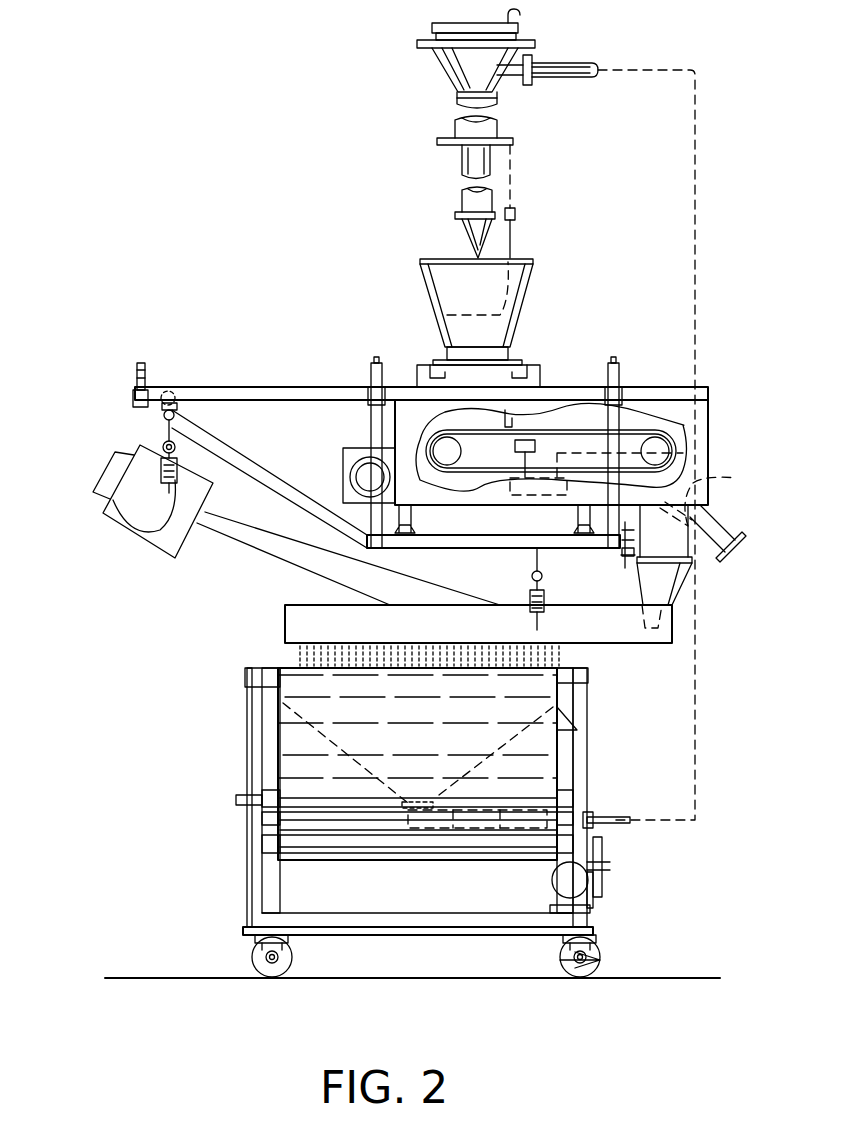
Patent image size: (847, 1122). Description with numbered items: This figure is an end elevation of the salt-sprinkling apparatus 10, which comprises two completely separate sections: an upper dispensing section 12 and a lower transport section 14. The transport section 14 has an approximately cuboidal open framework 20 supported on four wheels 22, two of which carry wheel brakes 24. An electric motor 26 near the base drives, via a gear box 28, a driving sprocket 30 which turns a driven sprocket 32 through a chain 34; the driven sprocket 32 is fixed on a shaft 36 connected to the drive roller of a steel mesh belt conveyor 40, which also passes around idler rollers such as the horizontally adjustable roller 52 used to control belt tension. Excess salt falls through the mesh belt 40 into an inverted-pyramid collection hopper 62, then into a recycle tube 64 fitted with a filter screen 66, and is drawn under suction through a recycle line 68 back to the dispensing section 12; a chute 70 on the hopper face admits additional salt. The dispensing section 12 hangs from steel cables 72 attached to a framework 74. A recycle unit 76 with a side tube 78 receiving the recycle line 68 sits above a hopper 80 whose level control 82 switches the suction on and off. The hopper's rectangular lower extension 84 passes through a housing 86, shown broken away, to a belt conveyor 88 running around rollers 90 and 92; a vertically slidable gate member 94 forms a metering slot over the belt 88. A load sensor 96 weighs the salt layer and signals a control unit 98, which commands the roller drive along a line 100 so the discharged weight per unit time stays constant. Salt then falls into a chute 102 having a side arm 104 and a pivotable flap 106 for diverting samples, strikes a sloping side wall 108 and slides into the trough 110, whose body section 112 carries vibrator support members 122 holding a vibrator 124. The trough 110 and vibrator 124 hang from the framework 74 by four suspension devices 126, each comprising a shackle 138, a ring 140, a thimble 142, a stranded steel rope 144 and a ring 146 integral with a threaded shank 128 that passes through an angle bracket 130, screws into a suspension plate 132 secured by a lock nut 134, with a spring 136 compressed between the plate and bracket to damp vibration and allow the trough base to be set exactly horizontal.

The apparatus 10 is at (299, 291).
The dispensing section 12 is at (584, 271).
The transport section 14 is at (723, 720).
The open framework 20 is at (583, 766).
The wheels 22 is at (293, 960).
The wheel brakes 24 is at (558, 960).
The electric motor 26 is at (551, 877).
The gear box 28 is at (555, 898).
The driving sprocket 30 is at (603, 888).
The driven sprocket 32 is at (268, 853).
The chain 34 is at (603, 868).
The shaft 36 is at (600, 838).
The belt conveyor 40 is at (303, 765).
The idler roller 52 is at (263, 812).
The collection hopper 62 is at (317, 737).
The recycle tube 64 is at (452, 845).
The filter screen 66 is at (452, 830).
The recycle line 68 is at (698, 823).
The chute 70 is at (578, 725).
The steel cables 72 is at (140, 362).
The framework 74 is at (292, 486).
The recycle unit 76 is at (455, 68).
The side tube 78 is at (515, 80).
The hopper 80 is at (505, 312).
The level control 82 is at (512, 243).
The lower extension 84 is at (490, 423).
The housing 86 is at (696, 340).
The belt conveyor 88 is at (470, 432).
The roller 90 is at (447, 466).
The roller 92 is at (668, 447).
The gate member 94 is at (525, 417).
The load sensor 96 is at (514, 446).
The control unit 98 is at (542, 495).
The line 100 is at (573, 453).
The chute 102 is at (663, 583).
The side arm 104 is at (718, 528).
The flap 106 is at (722, 494).
The sloping side wall 108 is at (672, 593).
The trough 110 is at (491, 653).
The body section 112 is at (602, 644).
The vibrator support members 122 is at (258, 575).
The vibrator 124 is at (148, 537).
The suspension devices 126 is at (529, 580).
The threaded shank 128 is at (187, 448).
The angle bracket 130 is at (208, 490).
The suspension plate 132 is at (132, 535).
The lock nut 134 is at (158, 482).
The spring 136 is at (160, 468).
The shackle 138 is at (178, 390).
The ring 140 is at (162, 408).
The thimble 142 is at (167, 413).
The stranded steel rope 144 is at (167, 433).
The ring 146 is at (182, 448).